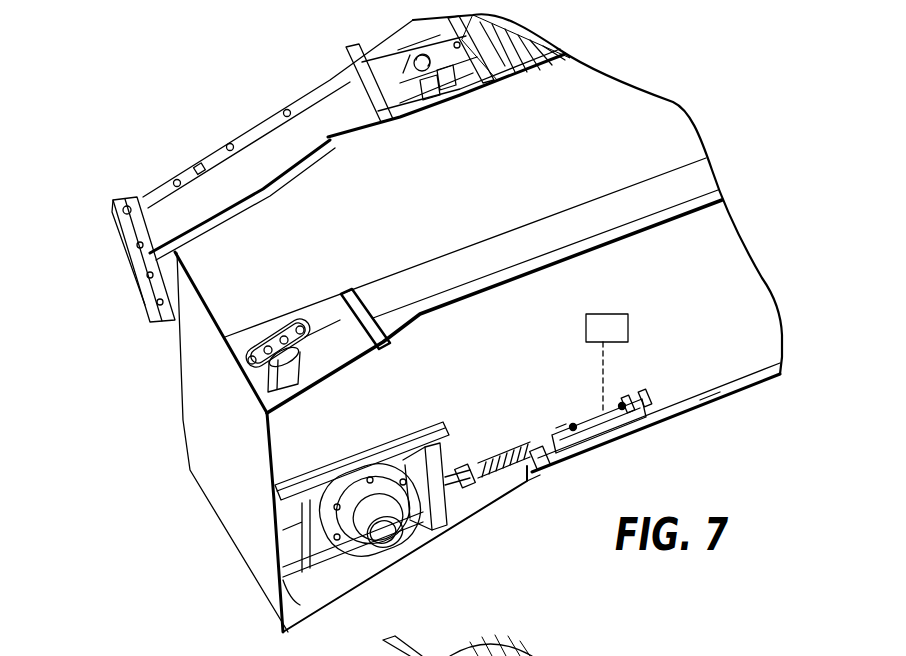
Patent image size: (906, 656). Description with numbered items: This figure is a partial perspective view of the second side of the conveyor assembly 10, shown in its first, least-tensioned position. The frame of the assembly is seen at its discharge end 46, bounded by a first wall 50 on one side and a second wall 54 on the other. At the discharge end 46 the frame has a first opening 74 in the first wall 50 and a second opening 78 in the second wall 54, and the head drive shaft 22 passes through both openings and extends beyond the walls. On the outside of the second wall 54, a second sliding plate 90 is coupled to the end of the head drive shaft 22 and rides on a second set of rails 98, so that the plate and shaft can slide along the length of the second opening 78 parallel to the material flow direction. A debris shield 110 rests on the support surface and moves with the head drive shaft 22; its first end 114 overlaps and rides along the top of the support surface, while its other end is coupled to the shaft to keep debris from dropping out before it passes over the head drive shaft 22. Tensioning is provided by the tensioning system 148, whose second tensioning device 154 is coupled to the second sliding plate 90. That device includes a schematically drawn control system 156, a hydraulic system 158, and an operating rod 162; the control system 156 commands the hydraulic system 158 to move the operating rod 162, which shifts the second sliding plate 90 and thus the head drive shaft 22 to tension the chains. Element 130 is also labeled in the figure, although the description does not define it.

The conveyor assembly 10 is at (115, 137).
The first wall 50 is at (600, 115).
The first end 114 is at (333, 335).
The debris shield 110 is at (317, 340).
The first opening 74 is at (238, 322).
The head drive shaft 22 is at (238, 346).
The roller 130 is at (283, 387).
The discharge end 46 is at (157, 462).
The second set of rails 98 is at (278, 487).
The second opening 78 is at (290, 532).
The second sliding plate 90 is at (428, 530).
The operating rod 162 is at (500, 442).
The hydraulic system 158 is at (610, 423).
The second tensioning device 154 is at (562, 418).
The control system 156 is at (628, 328).
The second wall 54 is at (703, 367).
The tensioning system 148 is at (538, 498).